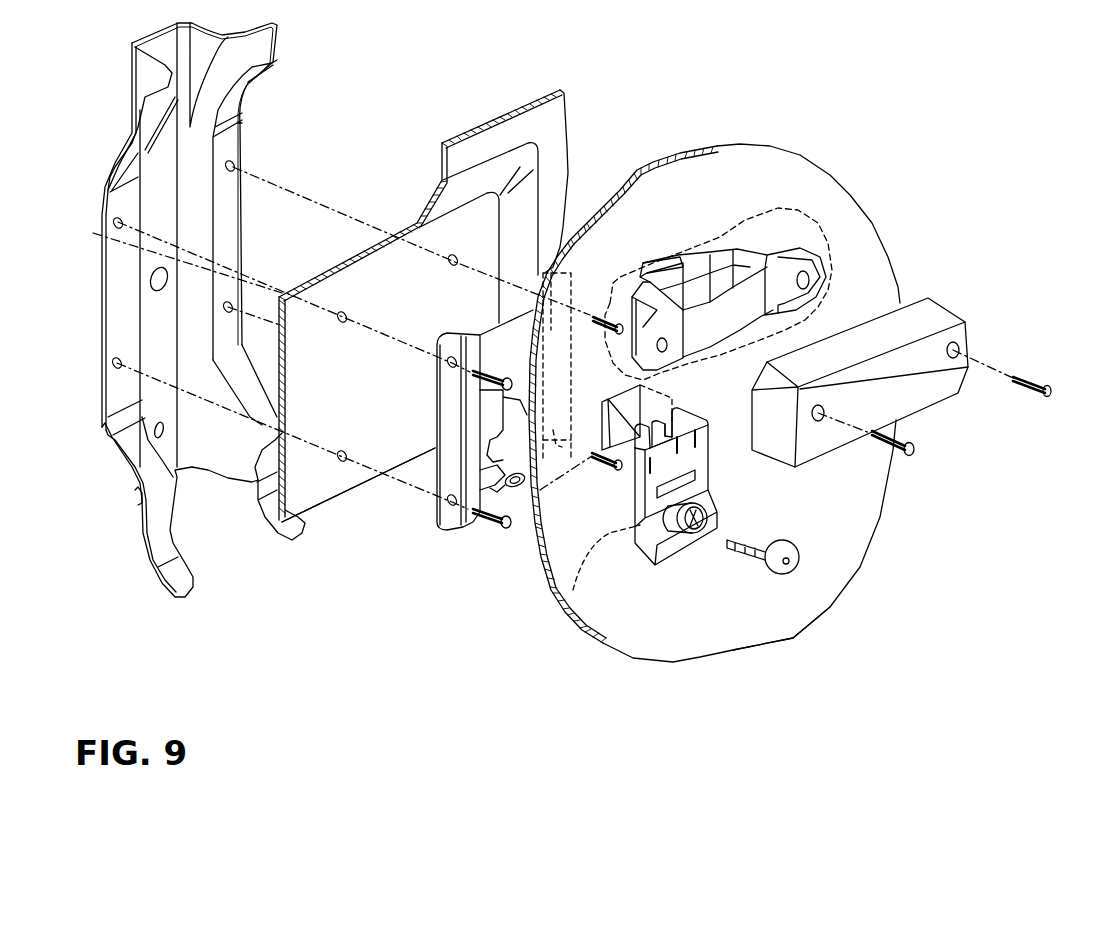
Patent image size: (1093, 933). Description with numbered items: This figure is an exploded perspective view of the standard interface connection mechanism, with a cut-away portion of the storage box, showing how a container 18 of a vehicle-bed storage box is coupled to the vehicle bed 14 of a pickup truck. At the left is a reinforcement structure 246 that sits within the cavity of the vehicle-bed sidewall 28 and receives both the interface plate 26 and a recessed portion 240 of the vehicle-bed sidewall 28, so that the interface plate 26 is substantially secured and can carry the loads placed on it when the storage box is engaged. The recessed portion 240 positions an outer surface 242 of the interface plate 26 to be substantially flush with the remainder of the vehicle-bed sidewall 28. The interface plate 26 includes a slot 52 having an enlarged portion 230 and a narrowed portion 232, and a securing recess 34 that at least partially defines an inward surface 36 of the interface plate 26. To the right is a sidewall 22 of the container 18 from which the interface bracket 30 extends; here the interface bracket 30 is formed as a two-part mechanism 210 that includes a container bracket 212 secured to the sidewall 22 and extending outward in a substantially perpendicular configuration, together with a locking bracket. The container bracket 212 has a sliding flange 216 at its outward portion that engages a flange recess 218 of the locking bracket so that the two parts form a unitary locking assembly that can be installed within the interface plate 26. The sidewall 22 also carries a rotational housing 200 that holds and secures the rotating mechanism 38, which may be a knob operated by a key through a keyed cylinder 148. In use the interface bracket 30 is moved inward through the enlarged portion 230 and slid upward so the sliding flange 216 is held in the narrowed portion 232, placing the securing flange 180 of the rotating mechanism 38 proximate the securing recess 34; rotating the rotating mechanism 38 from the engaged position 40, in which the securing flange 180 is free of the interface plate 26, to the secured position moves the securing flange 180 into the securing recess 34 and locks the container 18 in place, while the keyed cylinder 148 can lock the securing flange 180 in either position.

The vehicle bed 14 is at (443, 122).
The container 18 is at (783, 650).
The sidewall 22 is at (740, 170).
The interface plate 26 is at (433, 537).
The vehicle-bed sidewall 28 is at (503, 132).
The interface bracket 30 is at (643, 575).
The securing recess 34 is at (523, 487).
The inward surface 36 is at (435, 447).
The rotating mechanism 38 is at (724, 523).
The engaged position 40 is at (628, 537).
The slot 52 is at (495, 423).
The keyed cylinder 148 is at (695, 530).
The securing flange 180 is at (568, 604).
The rotational housing 200 is at (942, 298).
The two-part mechanism 210 is at (772, 473).
The container bracket 212 is at (743, 310).
The sliding flange 216 is at (660, 260).
The flange recess 218 is at (685, 417).
The enlarged portion 230 is at (457, 503).
The narrowed portion 232 is at (495, 393).
The recessed portion 240 is at (567, 130).
The outer surface 242 is at (553, 170).
The reinforcement structure 246 is at (250, 70).